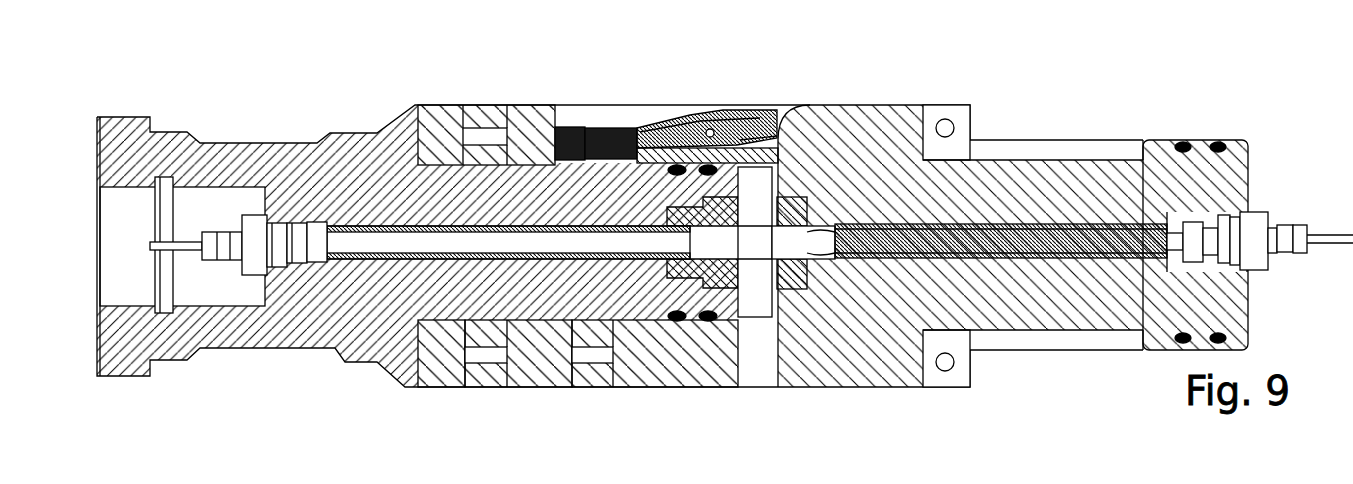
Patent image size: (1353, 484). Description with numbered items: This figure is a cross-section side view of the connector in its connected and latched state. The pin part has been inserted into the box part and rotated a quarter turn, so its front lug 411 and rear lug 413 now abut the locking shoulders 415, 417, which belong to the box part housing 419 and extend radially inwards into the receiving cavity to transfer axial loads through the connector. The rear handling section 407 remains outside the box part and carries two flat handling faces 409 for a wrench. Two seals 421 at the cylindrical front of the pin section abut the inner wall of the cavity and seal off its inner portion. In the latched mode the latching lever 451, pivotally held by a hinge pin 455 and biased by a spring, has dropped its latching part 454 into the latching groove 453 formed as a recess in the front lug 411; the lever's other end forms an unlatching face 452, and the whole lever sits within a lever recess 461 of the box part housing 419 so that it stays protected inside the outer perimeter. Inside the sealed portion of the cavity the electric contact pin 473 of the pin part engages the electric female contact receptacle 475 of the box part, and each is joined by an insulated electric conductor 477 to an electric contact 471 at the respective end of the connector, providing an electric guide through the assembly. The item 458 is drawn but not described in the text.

The handling section 407 is at (285, 124).
The handling faces 409 is at (263, 142).
The front lug 411 is at (601, 357).
The rear lug 413 is at (489, 357).
The locking shoulder 415 is at (575, 358).
The locking shoulder 417 is at (478, 357).
The box part housing 419 is at (873, 387).
The seals 421 is at (680, 322).
The latching lever 451 is at (652, 132).
The unlatching face 452 is at (748, 128).
The latching groove 453 is at (590, 133).
The latching part 454 is at (566, 140).
The hinge pin 455 is at (710, 128).
The latch base 458 is at (780, 140).
The lever recess 461 is at (613, 122).
The electric contact 471 is at (232, 232).
The electric contact pin 473 is at (790, 245).
The electric female contact receptacle 475 is at (825, 280).
The insulated electric conductor 477 is at (372, 243).